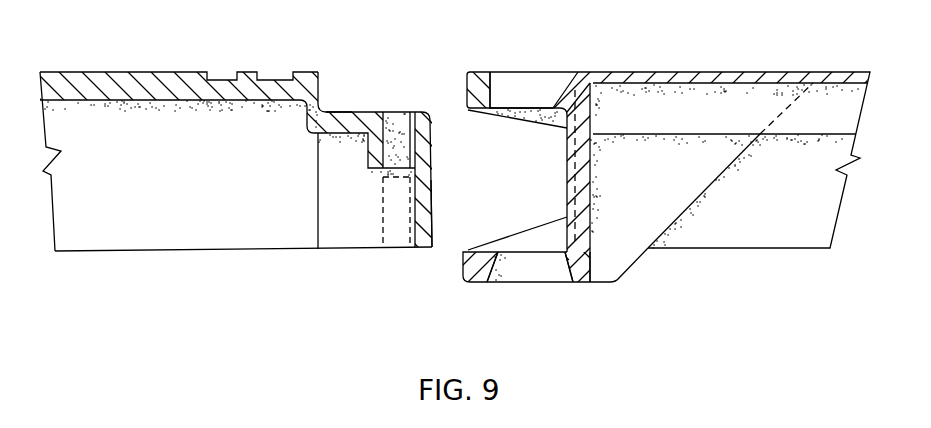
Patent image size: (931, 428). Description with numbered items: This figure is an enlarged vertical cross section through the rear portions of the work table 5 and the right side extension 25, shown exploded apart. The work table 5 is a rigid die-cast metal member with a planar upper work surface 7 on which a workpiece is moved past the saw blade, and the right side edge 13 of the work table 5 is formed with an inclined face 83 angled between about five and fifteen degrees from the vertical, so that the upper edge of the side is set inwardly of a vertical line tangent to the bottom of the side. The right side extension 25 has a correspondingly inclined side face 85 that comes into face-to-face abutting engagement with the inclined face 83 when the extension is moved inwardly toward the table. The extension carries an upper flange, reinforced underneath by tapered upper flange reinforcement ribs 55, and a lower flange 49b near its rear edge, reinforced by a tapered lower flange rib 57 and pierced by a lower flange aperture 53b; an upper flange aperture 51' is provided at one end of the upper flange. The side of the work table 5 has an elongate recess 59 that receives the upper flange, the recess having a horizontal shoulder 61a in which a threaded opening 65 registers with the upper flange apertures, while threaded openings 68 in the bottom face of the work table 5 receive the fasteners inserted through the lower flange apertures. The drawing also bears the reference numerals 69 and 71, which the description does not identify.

The work table 5 is at (152, 258).
The upper work surface 7 is at (103, 72).
The right side edge 13 is at (432, 208).
The right side extension 25 is at (682, 261).
The lower flange 49b is at (463, 283).
The upper flange aperture 51' is at (529, 65).
The lower flange aperture 53b is at (548, 266).
The upper flange reinforcement ribs 55 is at (540, 128).
The lower flange rib 57 is at (513, 237).
The recess 59 is at (350, 112).
The horizontal shoulder 61a is at (337, 101).
The threaded opening 65 is at (400, 133).
The threaded openings 68 is at (397, 245).
The clip block 69 is at (495, 100).
The retaining strip 71 is at (555, 92).
The inclined face 83 is at (433, 127).
The inclined side face 85 is at (568, 183).